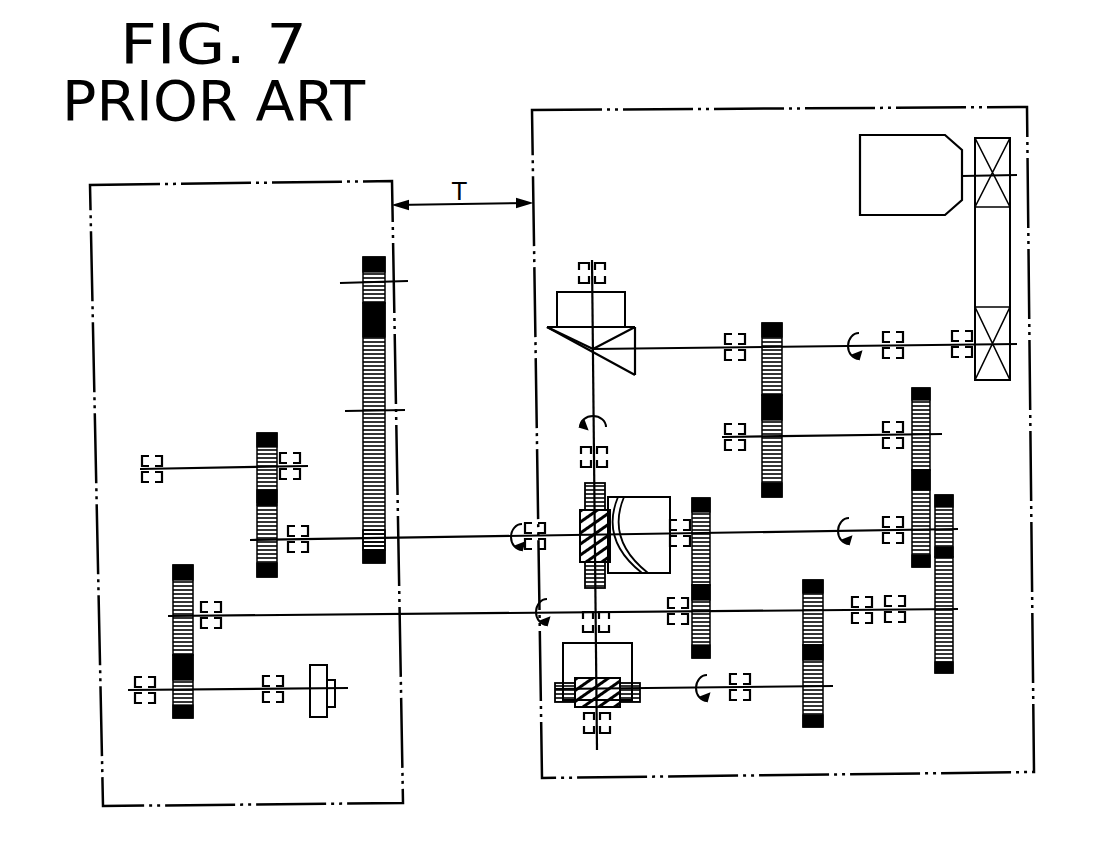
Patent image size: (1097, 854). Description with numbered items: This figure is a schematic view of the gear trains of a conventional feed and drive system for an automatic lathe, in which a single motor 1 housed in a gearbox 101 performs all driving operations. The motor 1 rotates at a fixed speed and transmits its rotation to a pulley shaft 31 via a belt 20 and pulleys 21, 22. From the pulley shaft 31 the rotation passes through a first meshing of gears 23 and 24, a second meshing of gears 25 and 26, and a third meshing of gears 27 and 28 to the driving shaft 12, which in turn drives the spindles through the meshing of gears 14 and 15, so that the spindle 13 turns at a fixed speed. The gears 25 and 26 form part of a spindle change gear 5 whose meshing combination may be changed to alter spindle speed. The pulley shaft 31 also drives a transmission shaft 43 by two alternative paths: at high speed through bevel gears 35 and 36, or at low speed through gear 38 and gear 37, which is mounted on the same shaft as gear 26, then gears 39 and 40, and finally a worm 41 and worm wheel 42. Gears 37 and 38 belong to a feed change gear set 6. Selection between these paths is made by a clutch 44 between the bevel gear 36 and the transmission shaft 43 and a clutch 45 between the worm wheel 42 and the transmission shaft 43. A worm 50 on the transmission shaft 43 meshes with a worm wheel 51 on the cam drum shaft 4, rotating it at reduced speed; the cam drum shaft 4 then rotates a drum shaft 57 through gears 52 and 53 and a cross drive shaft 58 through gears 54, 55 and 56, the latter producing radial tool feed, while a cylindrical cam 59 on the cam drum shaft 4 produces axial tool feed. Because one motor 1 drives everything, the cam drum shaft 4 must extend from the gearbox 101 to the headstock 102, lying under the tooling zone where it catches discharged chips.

The motor 1 is at (860, 192).
The cam drum shaft 4 is at (453, 535).
The spindle change gear 5 is at (993, 421).
The feed change gear set 6 is at (965, 628).
The driving shaft 12 is at (432, 618).
The spindle 13 is at (318, 718).
The gear 14 is at (173, 577).
The gear 15 is at (190, 720).
The belt 20 is at (1012, 232).
The pulley 21 is at (1012, 158).
The pulley 22 is at (1012, 330).
The gear 23 is at (783, 323).
The gear 24 is at (783, 466).
The gear 25 is at (930, 408).
The gear 26 is at (930, 492).
The gear 27 is at (707, 499).
The gear 28 is at (712, 637).
The pulley shaft 31 is at (925, 344).
The bevel gear 35 is at (633, 345).
The bevel gear 36 is at (568, 334).
The gear 37 is at (953, 500).
The gear 38 is at (953, 662).
The gear 39 is at (823, 625).
The gear 40 is at (803, 715).
The worm 41 is at (618, 708).
The worm wheel 42 is at (555, 700).
The transmission shaft 43 is at (598, 408).
The clutch 44 is at (623, 298).
The clutch 45 is at (563, 660).
The worm 50 is at (580, 520).
The worm wheel 51 is at (603, 484).
The gear 52 is at (282, 563).
The gear 53 is at (272, 433).
The gear 54 is at (368, 520).
The gear 55 is at (390, 357).
The gear 56 is at (388, 272).
The drum shaft 57 is at (210, 466).
The cross drive shaft 58 is at (350, 283).
The cylindrical cam 59 is at (655, 497).
The gearbox 101 is at (780, 776).
The headstock 102 is at (405, 735).